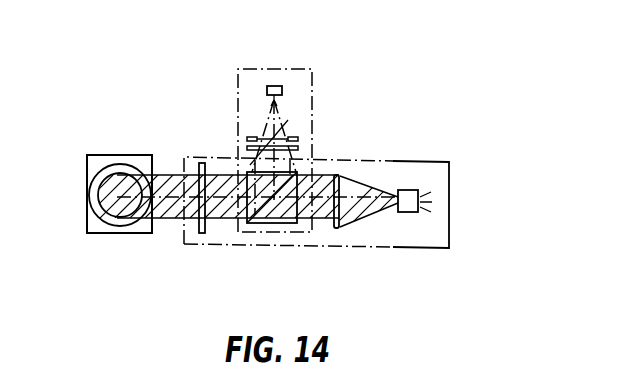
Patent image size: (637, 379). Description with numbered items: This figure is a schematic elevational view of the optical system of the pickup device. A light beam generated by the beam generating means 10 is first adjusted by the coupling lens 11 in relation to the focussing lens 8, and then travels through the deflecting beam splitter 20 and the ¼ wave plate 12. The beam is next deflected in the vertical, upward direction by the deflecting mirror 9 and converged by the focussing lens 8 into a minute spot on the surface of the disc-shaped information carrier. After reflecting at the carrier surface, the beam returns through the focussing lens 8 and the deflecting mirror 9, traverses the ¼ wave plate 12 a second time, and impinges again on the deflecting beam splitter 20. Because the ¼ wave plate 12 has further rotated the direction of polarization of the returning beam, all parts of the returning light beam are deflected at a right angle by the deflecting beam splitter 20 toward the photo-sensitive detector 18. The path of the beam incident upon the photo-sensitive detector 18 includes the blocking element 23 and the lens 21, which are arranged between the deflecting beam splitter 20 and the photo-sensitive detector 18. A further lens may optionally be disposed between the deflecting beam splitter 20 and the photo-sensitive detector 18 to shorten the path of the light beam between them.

The focussing lens 8 is at (117, 219).
The deflecting mirror 9 is at (88, 233).
The beam generating means 10 is at (408, 199).
The coupling lens 11 is at (337, 230).
The ¼ wave plate 12 is at (202, 233).
The photo-sensitive detector 18 is at (283, 93).
The deflecting beam splitter 20 is at (277, 228).
The lens 21 is at (298, 141).
The blocking element 23 is at (298, 149).